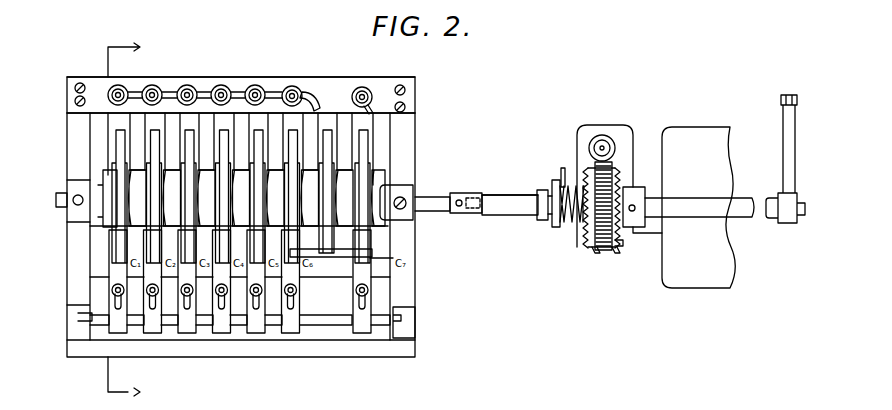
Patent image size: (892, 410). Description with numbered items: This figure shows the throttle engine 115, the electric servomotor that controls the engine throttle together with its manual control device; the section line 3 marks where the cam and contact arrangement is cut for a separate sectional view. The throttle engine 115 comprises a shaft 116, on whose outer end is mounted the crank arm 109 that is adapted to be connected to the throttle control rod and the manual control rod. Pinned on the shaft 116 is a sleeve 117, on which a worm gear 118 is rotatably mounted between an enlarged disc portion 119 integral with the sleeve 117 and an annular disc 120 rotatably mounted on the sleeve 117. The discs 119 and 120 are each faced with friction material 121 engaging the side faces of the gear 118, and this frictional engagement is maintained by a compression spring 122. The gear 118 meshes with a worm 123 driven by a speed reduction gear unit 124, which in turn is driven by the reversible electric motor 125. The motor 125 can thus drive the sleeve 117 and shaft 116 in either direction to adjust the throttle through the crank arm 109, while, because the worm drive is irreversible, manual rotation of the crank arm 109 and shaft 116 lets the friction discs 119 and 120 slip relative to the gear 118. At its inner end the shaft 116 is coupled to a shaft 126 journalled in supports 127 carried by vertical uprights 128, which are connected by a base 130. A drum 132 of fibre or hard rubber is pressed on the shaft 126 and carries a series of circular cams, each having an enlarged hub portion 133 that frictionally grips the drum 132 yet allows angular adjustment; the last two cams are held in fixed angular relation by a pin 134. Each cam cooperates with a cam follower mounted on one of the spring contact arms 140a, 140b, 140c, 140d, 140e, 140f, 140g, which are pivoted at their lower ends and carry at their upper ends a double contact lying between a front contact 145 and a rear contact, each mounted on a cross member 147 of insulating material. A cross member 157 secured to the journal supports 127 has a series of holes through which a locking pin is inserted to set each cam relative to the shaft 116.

The section line 3- 3 is at (131, 224).
The crank arm 109 is at (788, 170).
The throttle engine 115 is at (507, 157).
The shaft 116 is at (775, 212).
The sleeve 117 is at (627, 190).
The worm gear 118 is at (605, 251).
The enlarged disc portion 119 is at (620, 240).
The annular disc 120 is at (588, 235).
The friction material 121 is at (616, 252).
The compression spring 122 is at (563, 223).
The worm 123 is at (604, 135).
The speed reduction gear unit 124 is at (625, 133).
The reversible electric motor 125 is at (708, 137).
The shaft 126 is at (435, 202).
The supports 127 is at (416, 213).
The vertical uprights 128 is at (407, 278).
The base 130 is at (403, 350).
The drum 132 is at (303, 177).
The enlarged hub portion 133 is at (113, 165).
The pin 134 is at (350, 257).
The spring contact arm 140a is at (115, 323).
The spring contact arm 140b is at (152, 327).
The spring contact arm 140c is at (188, 326).
The spring contact arm 140d is at (223, 326).
The spring contact arm 140e is at (262, 327).
The spring contact arm 140f is at (290, 326).
The spring contact arm 140g is at (362, 328).
The front contact 145 is at (368, 88).
The cross member 147 is at (338, 93).
The cross member 157 is at (395, 187).